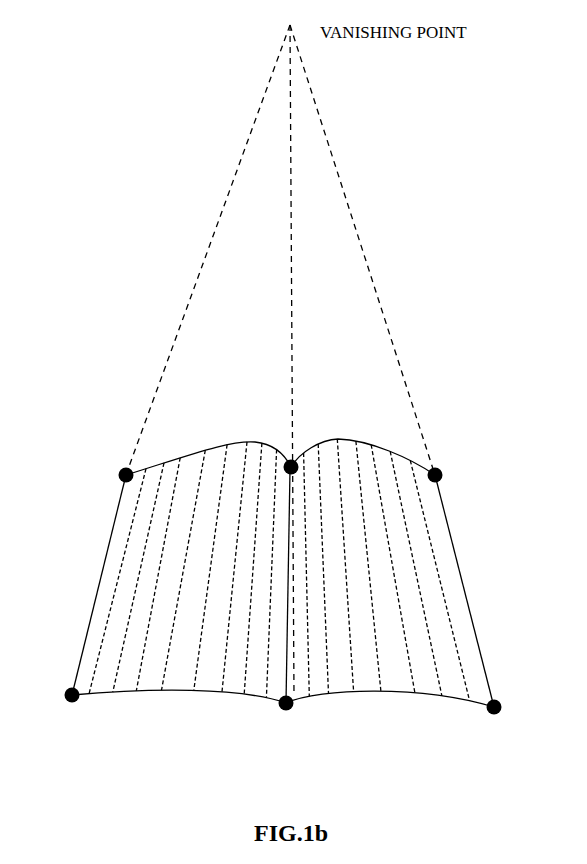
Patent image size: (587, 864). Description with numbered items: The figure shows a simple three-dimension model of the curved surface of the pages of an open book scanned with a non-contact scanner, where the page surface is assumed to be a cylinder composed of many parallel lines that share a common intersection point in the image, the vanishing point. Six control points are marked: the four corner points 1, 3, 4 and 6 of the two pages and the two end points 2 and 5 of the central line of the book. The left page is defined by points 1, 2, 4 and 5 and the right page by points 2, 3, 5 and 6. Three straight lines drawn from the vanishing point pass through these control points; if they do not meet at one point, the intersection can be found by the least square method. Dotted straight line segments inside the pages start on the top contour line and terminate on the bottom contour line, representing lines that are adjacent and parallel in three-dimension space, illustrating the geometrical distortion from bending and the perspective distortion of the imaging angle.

The corner point 1 is at (115, 469).
The end point of the central line 2 is at (279, 446).
The corner point 3 is at (449, 465).
The corner point 4 is at (56, 707).
The end point of the central line 5 is at (286, 728).
The corner point 6 is at (516, 718).